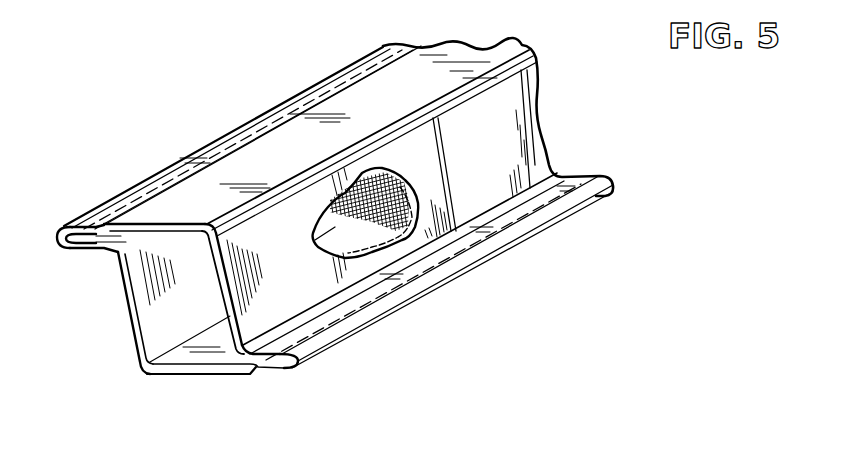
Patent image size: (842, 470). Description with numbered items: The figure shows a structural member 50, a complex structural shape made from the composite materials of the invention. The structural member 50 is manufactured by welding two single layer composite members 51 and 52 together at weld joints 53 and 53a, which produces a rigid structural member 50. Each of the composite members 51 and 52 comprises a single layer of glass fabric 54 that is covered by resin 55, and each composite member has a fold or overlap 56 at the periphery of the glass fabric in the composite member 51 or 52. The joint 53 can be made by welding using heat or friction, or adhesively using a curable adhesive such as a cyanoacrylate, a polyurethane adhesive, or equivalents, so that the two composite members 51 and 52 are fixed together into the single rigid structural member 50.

The structural member 50 is at (556, 88).
The single layer composite member 51 is at (543, 125).
The single layer composite member 52 is at (128, 324).
The weld joint 53 is at (96, 250).
The weld joint 53a is at (280, 368).
The glass fabric 54 is at (316, 243).
The resin 55 is at (523, 162).
The fold or overlap 56 is at (73, 249).